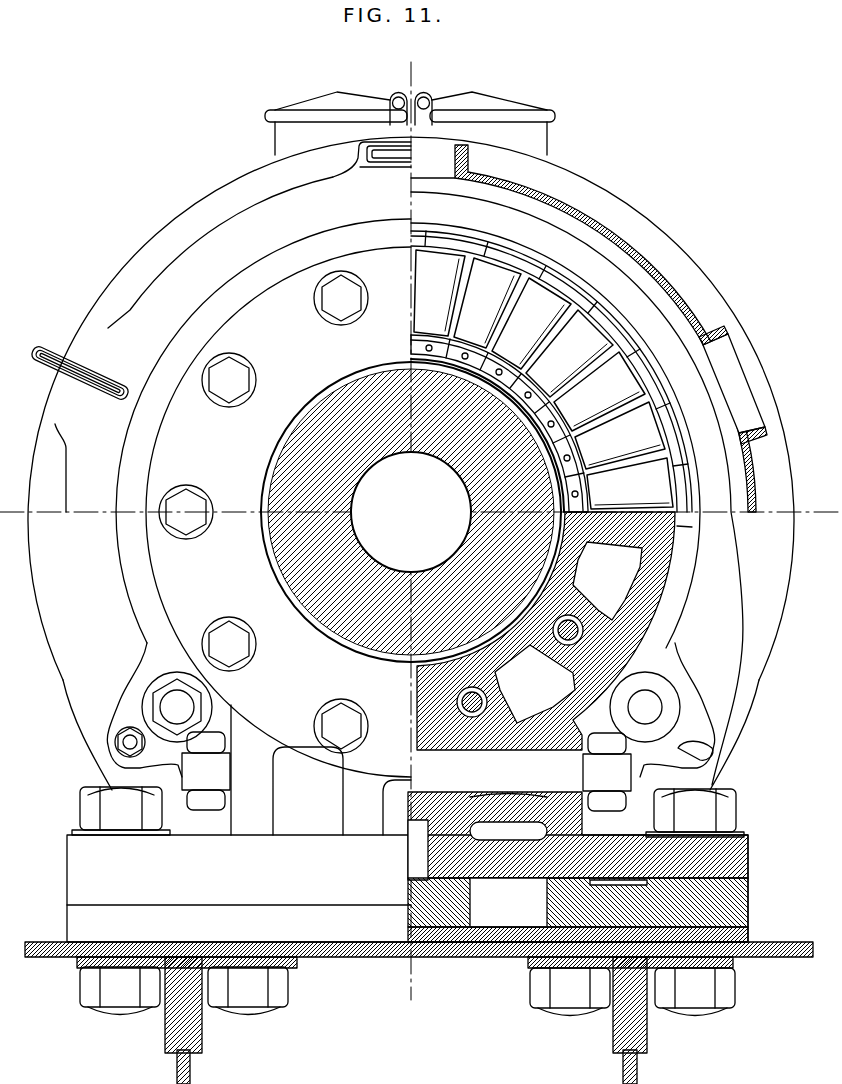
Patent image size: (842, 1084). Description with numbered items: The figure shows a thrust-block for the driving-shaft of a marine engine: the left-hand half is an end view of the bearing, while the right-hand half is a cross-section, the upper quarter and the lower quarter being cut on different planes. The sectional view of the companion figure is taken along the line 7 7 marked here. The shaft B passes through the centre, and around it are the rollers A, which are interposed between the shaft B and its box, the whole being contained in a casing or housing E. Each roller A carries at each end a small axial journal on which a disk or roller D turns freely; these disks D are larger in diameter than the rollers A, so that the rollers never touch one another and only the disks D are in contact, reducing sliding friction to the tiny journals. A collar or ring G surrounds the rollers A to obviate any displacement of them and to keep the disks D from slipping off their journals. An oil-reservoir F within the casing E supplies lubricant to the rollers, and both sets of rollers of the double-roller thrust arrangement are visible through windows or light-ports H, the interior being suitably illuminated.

The rollers A is at (543, 379).
The shaft B is at (443, 565).
The disks or rollers D is at (409, 334).
The casing or housing E is at (575, 586).
The oil-reservoir F is at (410, 123).
The collar or ring G is at (699, 312).
The windows or light-ports H is at (76, 370).
The section line 7 7 is at (411, 287).